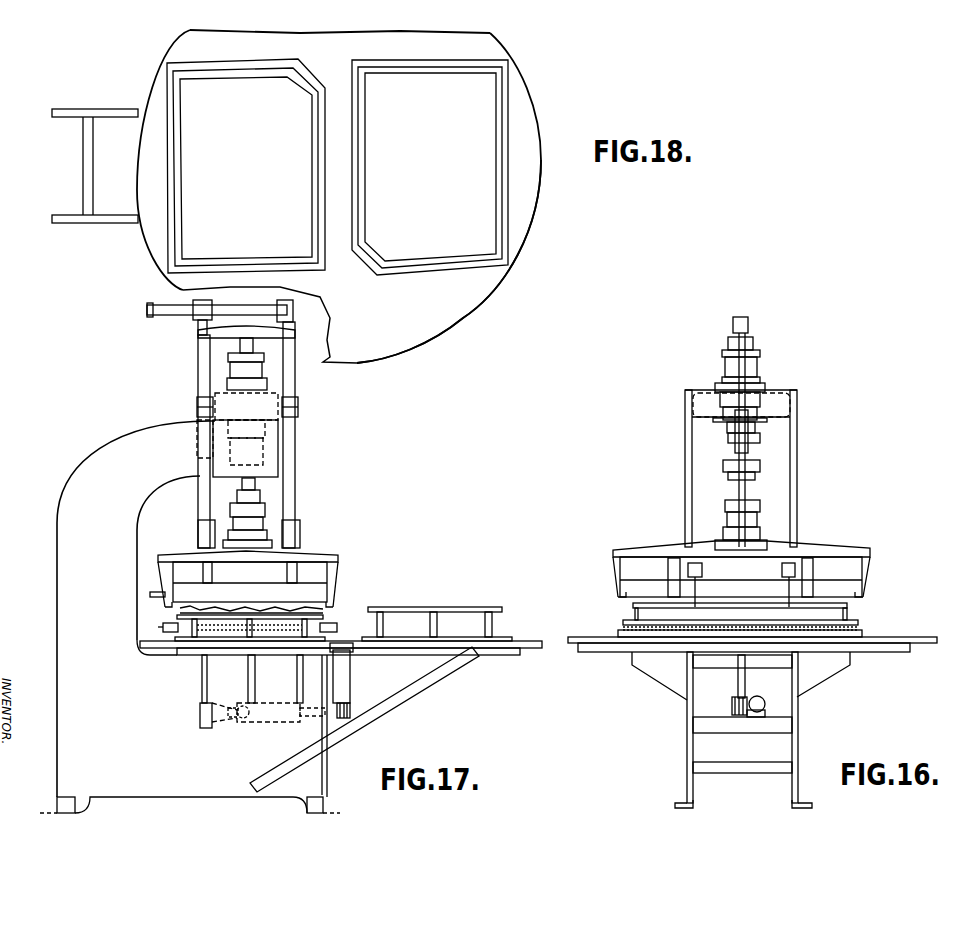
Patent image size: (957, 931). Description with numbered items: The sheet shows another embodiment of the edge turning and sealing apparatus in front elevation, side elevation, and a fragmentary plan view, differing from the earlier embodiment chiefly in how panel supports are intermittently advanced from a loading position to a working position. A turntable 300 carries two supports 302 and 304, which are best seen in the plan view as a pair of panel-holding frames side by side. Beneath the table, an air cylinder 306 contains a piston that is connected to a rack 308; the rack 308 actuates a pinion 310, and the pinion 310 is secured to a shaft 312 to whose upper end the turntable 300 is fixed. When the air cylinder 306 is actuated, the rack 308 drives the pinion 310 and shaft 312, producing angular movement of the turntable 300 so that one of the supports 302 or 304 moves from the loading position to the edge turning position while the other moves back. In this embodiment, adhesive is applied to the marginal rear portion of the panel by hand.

In FIG. 18, the turntable 300 is at (443, 330).
In FIG. 17, the turntable 300 is at (427, 650).
In FIG. 18, the support 302 is at (445, 181).
In FIG. 17, the support 302 is at (418, 607).
In FIG. 18, the support 304 is at (252, 181).
In FIG. 17, the support 304 is at (180, 612).
In FIG. 17, the air cylinder 306 is at (268, 723).
In FIG. 16, the air cylinder 306 is at (765, 697).
In FIG. 17, the rack 308 is at (322, 700).
In FIG. 16, the rack 308 is at (767, 710).
In FIG. 17, the pinion 310 is at (352, 710).
In FIG. 16, the pinion 310 is at (727, 705).
In FIG. 17, the shaft 312 is at (350, 678).
In FIG. 16, the shaft 312 is at (738, 688).